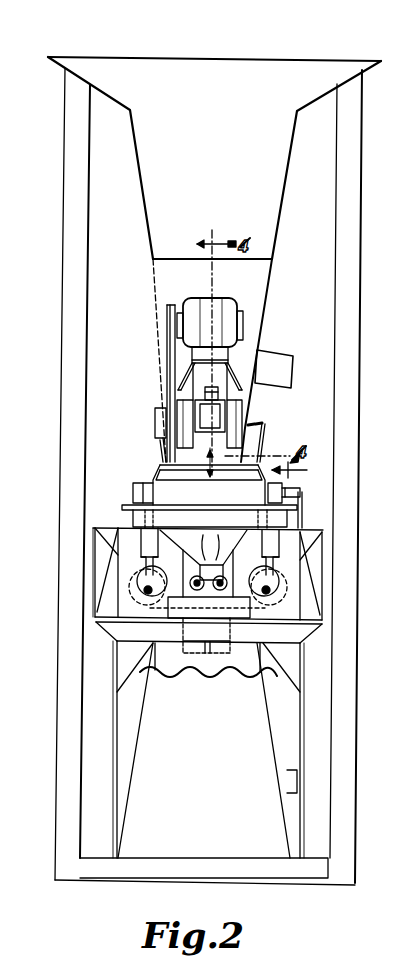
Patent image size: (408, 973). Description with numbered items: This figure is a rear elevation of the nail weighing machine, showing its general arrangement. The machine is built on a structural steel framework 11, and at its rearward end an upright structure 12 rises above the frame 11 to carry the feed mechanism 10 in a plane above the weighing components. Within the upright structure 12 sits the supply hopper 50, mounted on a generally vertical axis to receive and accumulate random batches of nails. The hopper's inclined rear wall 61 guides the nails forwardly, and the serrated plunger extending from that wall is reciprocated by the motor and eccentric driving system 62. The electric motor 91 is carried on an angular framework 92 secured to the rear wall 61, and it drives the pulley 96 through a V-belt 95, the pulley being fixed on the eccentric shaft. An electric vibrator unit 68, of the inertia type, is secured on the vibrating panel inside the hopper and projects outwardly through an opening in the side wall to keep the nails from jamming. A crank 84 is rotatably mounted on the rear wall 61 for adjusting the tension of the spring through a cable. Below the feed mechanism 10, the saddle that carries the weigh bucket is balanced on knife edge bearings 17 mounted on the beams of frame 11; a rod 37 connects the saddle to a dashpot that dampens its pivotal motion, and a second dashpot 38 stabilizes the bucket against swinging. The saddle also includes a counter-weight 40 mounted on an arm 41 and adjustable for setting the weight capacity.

The feed mechanism 10 is at (355, 62).
The structural steel framework 11 is at (100, 741).
The upright structure 12 is at (64, 297).
The knife edge bearings 17 is at (136, 492).
The rod 37 is at (303, 510).
The second dashpot 38 is at (214, 545).
The counter-weight 40 is at (156, 600).
The arm 41 is at (150, 543).
The supply hopper 50 is at (288, 178).
The inclined rear wall 61 is at (257, 331).
The motor and eccentric driving system 62 is at (165, 393).
The electric vibrator unit 68 is at (277, 364).
The crank 84 is at (268, 453).
The electric motor 91 is at (213, 302).
The angular framework 92 is at (293, 380).
The V-belt 95 is at (167, 361).
The pulley 96 is at (163, 440).